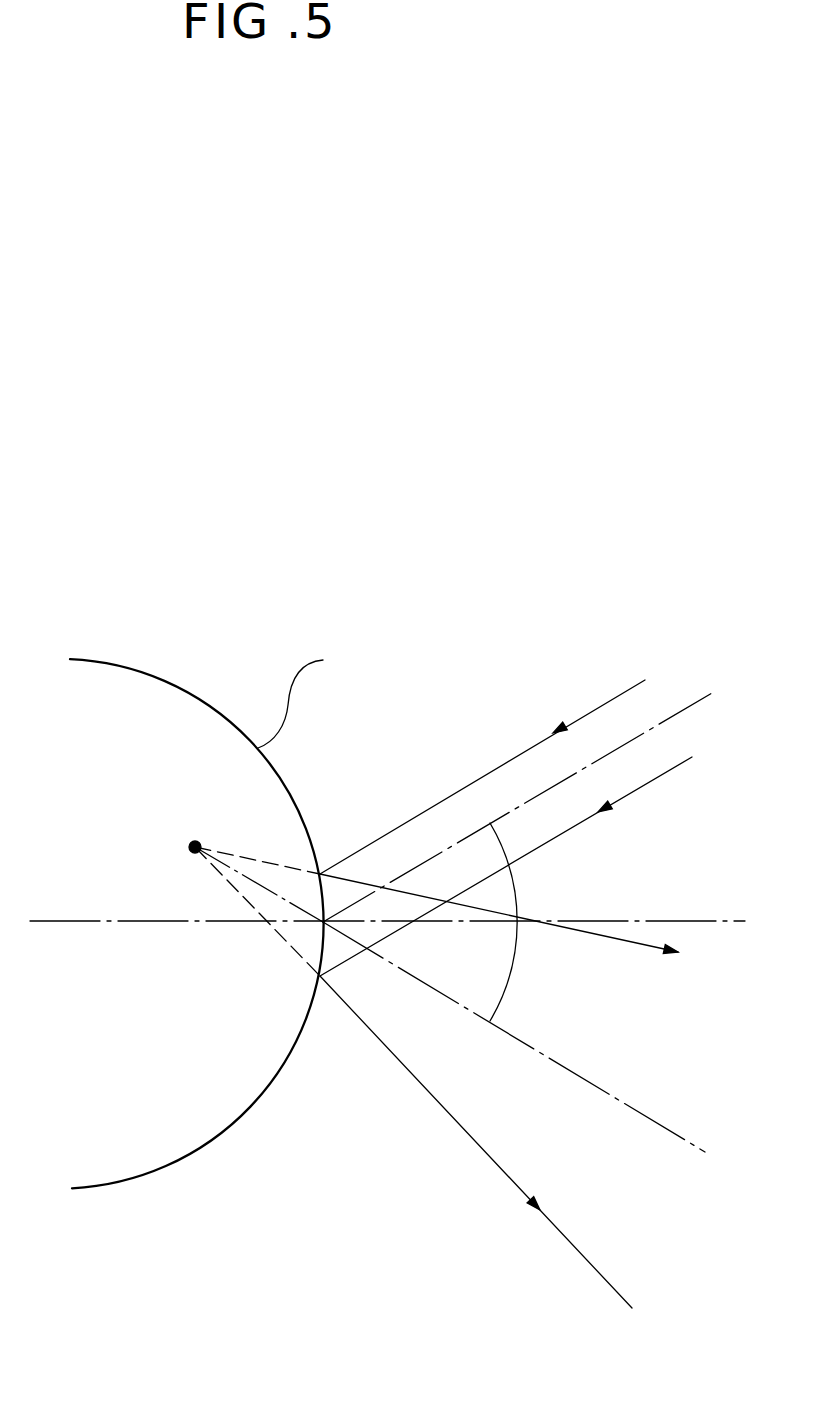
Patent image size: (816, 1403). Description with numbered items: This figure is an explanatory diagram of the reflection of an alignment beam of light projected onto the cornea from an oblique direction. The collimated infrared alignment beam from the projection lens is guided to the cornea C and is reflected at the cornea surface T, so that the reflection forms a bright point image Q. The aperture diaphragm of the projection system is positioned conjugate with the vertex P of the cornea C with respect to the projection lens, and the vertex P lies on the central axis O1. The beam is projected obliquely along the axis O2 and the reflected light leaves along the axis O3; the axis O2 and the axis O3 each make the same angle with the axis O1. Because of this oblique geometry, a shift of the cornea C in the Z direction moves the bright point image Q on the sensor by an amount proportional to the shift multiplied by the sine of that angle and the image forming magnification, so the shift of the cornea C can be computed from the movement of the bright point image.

The cornea C is at (211, 668).
The cornea surface T is at (301, 693).
The bright point image Q is at (195, 847).
The vertex of the cornea P is at (323, 922).
The axis O1 is at (683, 918).
The axis O2 is at (716, 583).
The axis O3 is at (660, 1122).